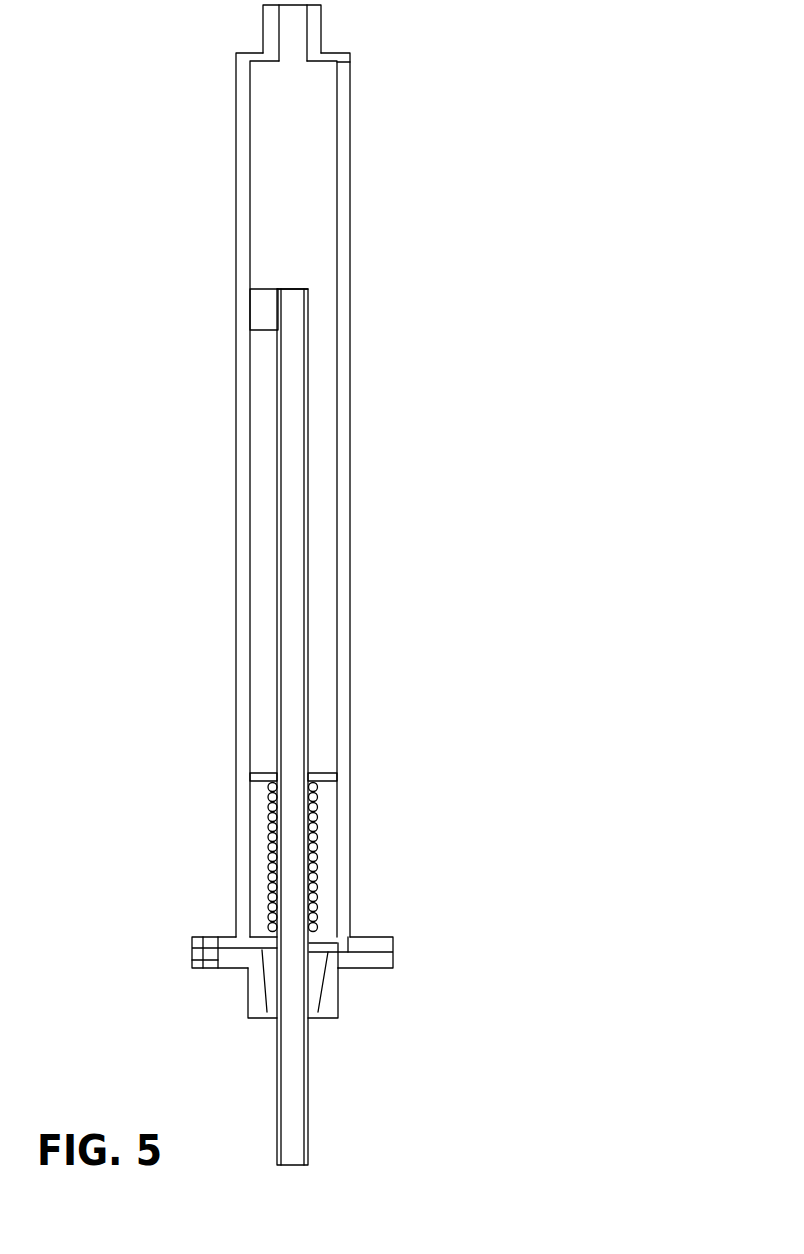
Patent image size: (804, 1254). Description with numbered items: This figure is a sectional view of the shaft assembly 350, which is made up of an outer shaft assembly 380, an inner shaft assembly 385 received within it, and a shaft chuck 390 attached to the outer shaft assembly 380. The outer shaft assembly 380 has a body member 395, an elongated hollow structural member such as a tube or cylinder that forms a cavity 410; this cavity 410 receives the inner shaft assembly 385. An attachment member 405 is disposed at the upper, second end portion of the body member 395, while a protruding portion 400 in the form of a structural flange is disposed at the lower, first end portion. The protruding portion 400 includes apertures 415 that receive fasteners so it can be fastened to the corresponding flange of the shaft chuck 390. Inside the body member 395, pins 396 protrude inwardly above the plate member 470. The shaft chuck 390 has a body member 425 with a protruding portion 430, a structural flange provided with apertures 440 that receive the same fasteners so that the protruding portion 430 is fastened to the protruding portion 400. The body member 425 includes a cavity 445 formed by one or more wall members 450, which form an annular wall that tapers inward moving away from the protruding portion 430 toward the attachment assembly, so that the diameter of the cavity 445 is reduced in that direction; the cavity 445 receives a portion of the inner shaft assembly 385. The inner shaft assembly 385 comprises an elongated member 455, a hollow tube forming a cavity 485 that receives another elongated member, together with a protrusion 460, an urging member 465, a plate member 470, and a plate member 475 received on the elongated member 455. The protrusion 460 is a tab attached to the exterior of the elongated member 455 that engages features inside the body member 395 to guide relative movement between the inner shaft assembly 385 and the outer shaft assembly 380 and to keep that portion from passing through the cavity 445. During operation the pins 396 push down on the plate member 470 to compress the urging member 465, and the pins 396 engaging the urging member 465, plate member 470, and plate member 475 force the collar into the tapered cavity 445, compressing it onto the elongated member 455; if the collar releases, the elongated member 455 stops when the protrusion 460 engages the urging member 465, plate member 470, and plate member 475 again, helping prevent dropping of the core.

The shaft assembly 350 is at (436, 120).
The outer shaft assembly 380 is at (353, 162).
The inner shaft assembly 385 is at (312, 553).
The shaft chuck 390 is at (378, 1050).
The body member 395 is at (345, 275).
The pins 396 is at (255, 767).
The protruding portion 400 is at (380, 937).
The attachment member 405 is at (322, 21).
The cavity 410 is at (312, 218).
The apertures 415 is at (208, 943).
The body member 425 is at (322, 1030).
The protruding portion 430 is at (364, 968).
The apertures 440 is at (208, 968).
The cavity 445 is at (317, 992).
The wall members 450 is at (257, 1005).
The elongated member 455 is at (309, 316).
The protrusion 460 is at (265, 305).
The urging member 465 is at (312, 820).
The plate member 470 is at (322, 772).
The plate member 475 is at (322, 943).
The cavity 485 is at (293, 425).